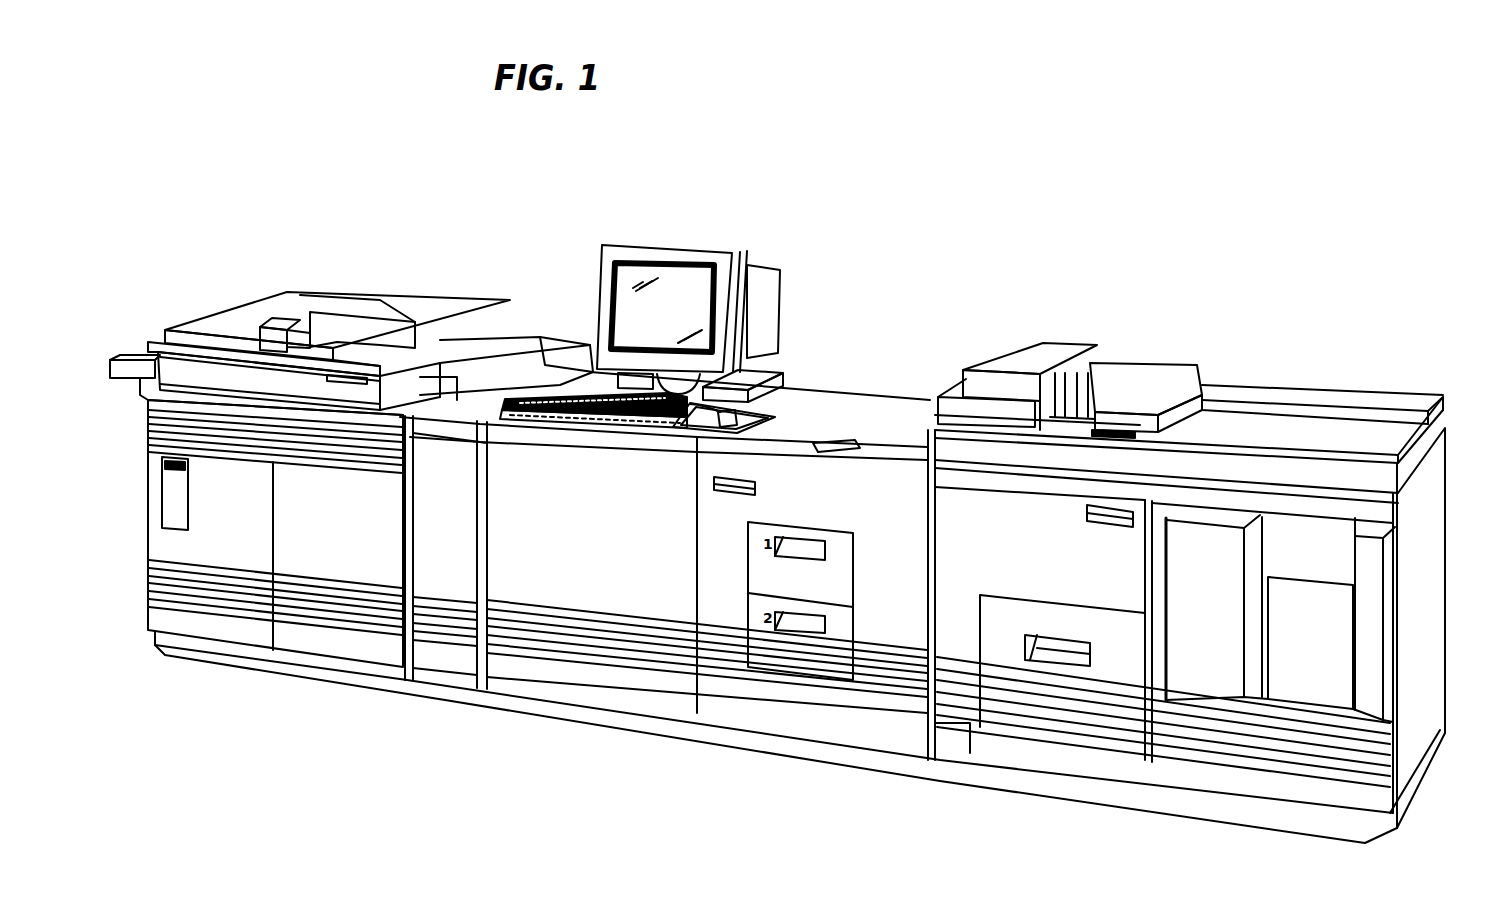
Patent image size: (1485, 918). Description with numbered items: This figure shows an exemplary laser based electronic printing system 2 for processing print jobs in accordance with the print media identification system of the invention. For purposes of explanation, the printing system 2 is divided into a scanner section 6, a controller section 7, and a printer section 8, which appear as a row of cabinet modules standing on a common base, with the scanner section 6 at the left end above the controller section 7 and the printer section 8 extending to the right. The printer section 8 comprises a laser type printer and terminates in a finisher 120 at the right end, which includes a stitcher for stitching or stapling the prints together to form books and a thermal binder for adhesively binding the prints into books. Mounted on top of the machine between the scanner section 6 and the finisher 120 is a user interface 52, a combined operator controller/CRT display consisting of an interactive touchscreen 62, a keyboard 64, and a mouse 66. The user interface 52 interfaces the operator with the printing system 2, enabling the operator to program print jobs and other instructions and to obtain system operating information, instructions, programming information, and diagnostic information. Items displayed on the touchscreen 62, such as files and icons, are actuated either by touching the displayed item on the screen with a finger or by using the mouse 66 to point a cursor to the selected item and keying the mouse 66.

The printing system 2 is at (923, 166).
The scanner section 6 is at (400, 266).
The controller section 7 is at (128, 534).
The printer section 8 is at (1390, 843).
The user interface 52 is at (670, 294).
The interactive touchscreen 62 is at (628, 318).
The keyboard 64 is at (583, 437).
The mouse 66 is at (685, 440).
The finisher 120 is at (1301, 352).